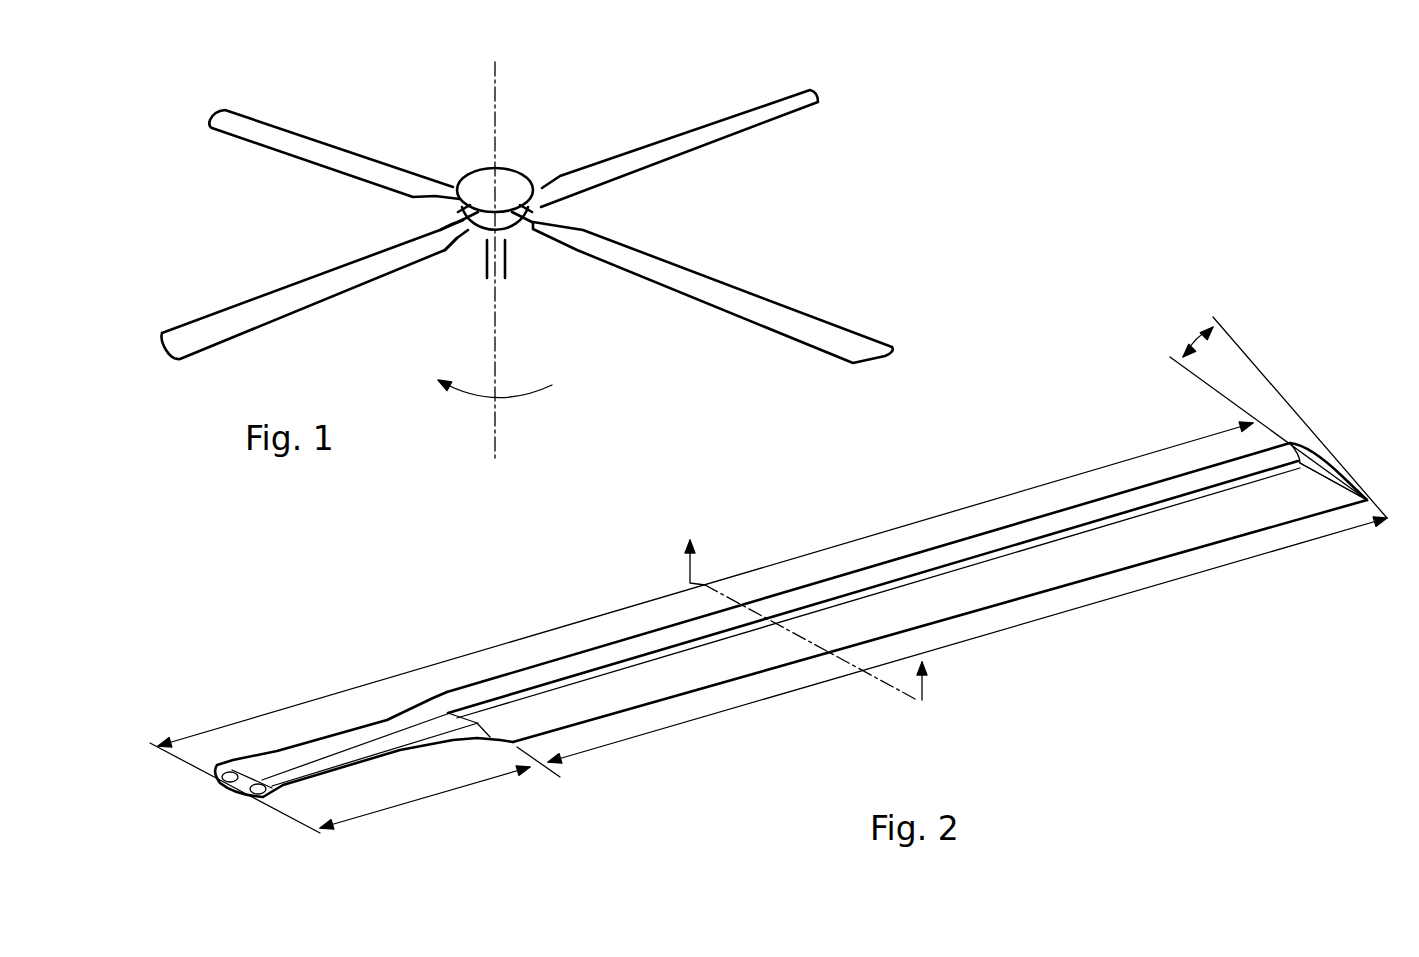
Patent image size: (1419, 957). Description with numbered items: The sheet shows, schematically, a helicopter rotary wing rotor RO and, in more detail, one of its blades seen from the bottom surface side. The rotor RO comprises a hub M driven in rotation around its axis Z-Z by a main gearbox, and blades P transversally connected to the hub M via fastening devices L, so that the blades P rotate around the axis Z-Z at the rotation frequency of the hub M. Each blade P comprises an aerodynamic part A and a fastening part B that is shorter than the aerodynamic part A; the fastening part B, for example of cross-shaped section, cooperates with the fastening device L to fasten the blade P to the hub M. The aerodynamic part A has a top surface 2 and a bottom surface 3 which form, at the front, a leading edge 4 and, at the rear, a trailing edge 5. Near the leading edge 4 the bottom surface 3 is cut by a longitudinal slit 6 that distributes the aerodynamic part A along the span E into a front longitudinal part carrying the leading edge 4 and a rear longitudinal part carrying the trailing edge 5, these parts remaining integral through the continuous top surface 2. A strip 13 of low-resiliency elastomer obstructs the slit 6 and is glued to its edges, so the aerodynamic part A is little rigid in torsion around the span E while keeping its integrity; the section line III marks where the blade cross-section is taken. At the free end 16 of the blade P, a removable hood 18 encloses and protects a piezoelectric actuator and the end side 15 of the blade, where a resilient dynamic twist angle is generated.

In FIG. 1, the rotor axis Z is at (482, 262).
In FIG. 1, the rotary wing rotor RO is at (527, 201).
In FIG. 1, the aerodynamic part A is at (727, 128).
In FIG. 2, the aerodynamic part A is at (1060, 612).
In FIG. 1, the blade P is at (295, 266).
In FIG. 2, the blade P is at (718, 732).
In FIG. 1, the fastening part B is at (443, 232).
In FIG. 2, the fastening part B is at (407, 804).
In FIG. 1, the hub M is at (485, 268).
In FIG. 1, the fastening device L is at (520, 240).
In FIG. 2, the top surface 2 is at (595, 690).
In FIG. 2, the bottom surface 3 is at (980, 587).
In FIG. 2, the leading edge 4 is at (850, 572).
In FIG. 2, the trailing edge 5 is at (1110, 572).
In FIG. 2, the longitudinal slit 6 is at (623, 657).
In FIG. 2, the strip 13 is at (893, 582).
In FIG. 2, the end side 15 is at (1325, 463).
In FIG. 2, the free end 16 is at (1297, 497).
In FIG. 2, the removable hood 18 is at (1253, 487).
In FIG. 2, the span E is at (935, 502).
In FIG. 2, the section line III is at (820, 616).